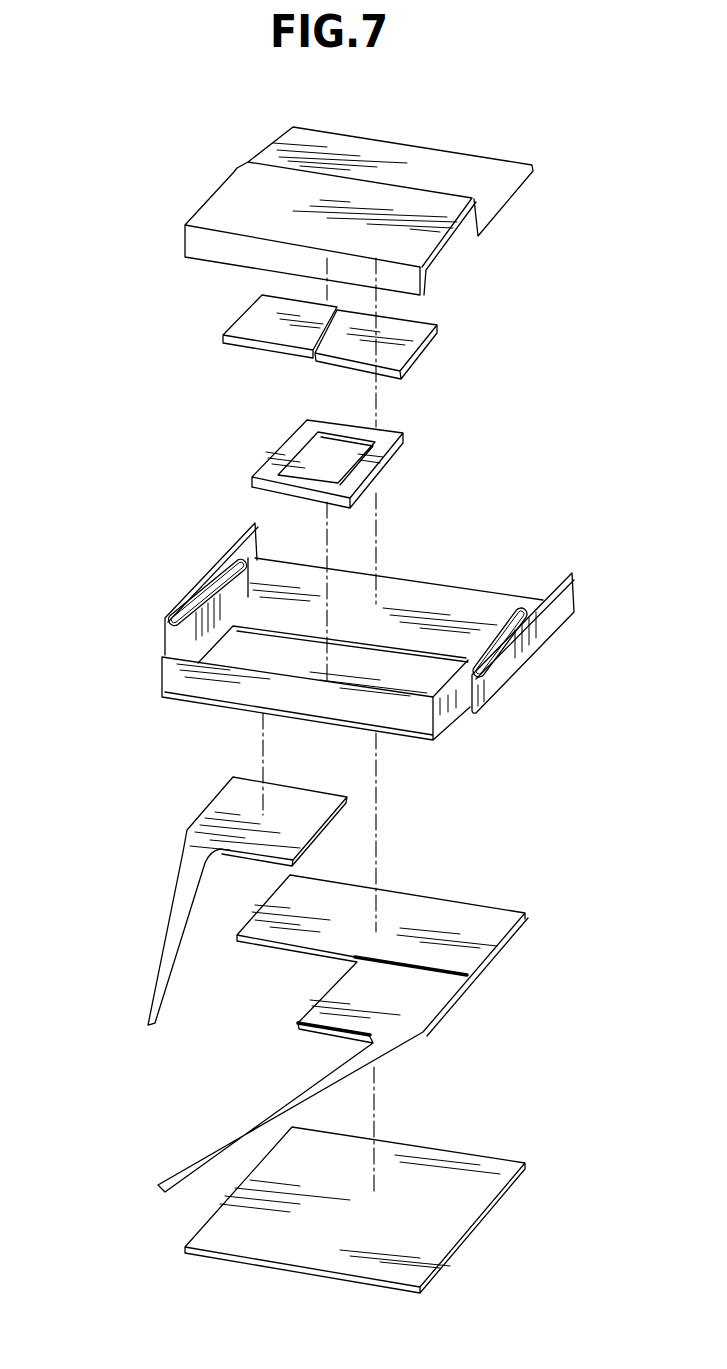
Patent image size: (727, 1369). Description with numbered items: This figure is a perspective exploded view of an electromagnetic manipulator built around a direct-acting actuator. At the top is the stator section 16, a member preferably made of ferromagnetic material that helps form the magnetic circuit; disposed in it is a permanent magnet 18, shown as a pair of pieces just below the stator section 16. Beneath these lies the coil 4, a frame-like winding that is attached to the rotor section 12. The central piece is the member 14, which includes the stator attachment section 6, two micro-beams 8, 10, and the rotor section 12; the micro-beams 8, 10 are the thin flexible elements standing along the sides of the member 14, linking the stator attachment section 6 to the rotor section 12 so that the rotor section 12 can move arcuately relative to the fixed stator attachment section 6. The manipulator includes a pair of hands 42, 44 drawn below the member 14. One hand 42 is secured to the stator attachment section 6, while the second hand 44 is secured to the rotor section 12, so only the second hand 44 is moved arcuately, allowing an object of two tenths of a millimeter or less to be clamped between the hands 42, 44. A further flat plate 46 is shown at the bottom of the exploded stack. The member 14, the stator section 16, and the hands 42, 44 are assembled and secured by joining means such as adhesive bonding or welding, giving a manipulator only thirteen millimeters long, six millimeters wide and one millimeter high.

The coil 4 is at (293, 443).
The stator attachment section 6 is at (403, 603).
The micro-beam 8 is at (482, 714).
The micro-beam 10 is at (168, 638).
The rotor section 12 is at (228, 680).
The member 14 is at (327, 653).
The stator section 16 is at (242, 210).
The permanent magnet 18 is at (258, 318).
The hand 42 is at (427, 992).
The hand 44 is at (187, 882).
The bottom plate 46 is at (448, 1210).